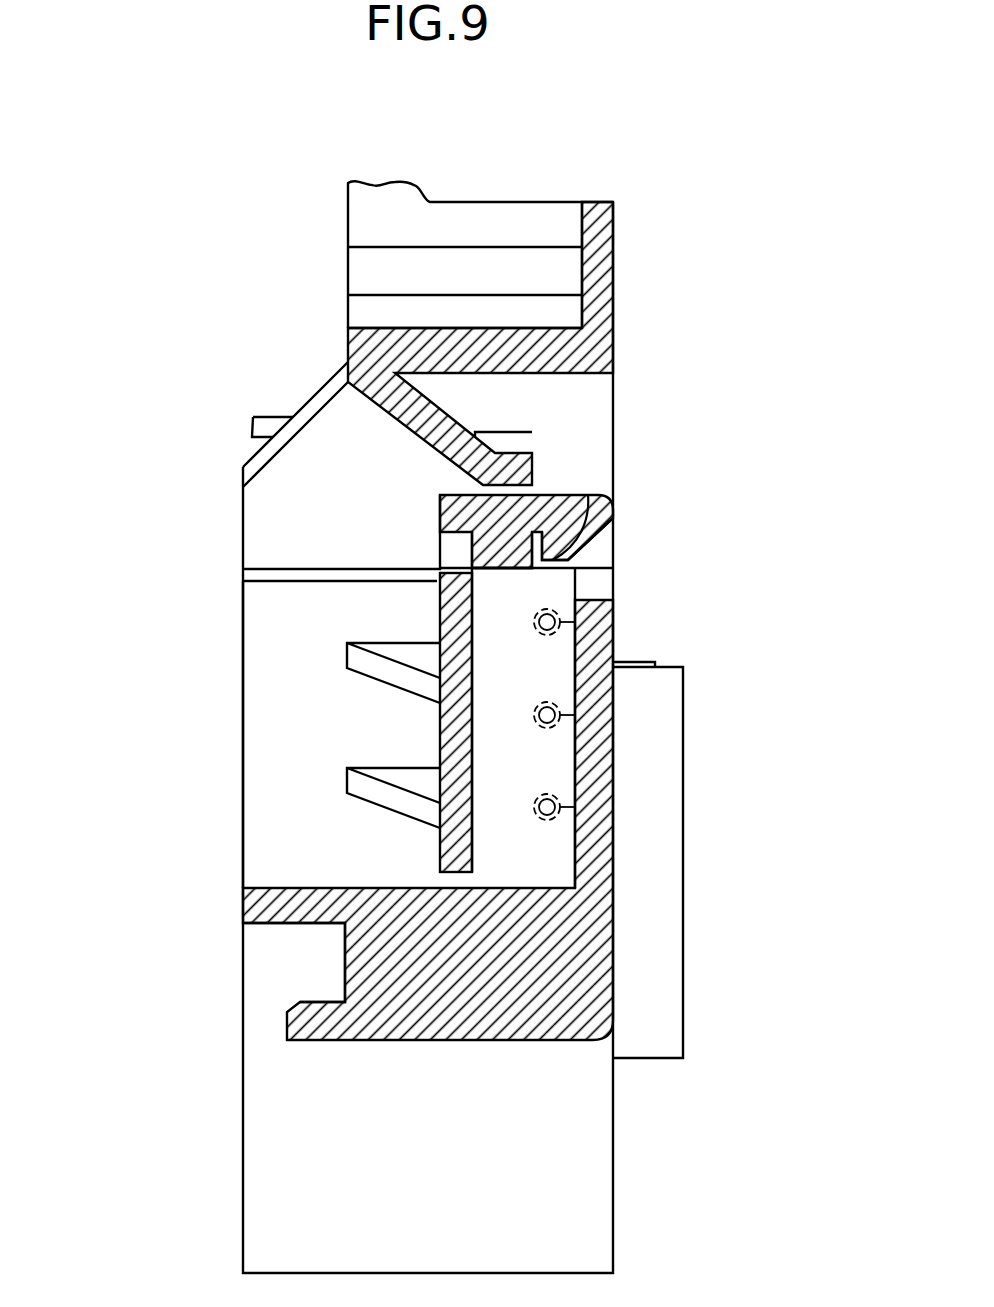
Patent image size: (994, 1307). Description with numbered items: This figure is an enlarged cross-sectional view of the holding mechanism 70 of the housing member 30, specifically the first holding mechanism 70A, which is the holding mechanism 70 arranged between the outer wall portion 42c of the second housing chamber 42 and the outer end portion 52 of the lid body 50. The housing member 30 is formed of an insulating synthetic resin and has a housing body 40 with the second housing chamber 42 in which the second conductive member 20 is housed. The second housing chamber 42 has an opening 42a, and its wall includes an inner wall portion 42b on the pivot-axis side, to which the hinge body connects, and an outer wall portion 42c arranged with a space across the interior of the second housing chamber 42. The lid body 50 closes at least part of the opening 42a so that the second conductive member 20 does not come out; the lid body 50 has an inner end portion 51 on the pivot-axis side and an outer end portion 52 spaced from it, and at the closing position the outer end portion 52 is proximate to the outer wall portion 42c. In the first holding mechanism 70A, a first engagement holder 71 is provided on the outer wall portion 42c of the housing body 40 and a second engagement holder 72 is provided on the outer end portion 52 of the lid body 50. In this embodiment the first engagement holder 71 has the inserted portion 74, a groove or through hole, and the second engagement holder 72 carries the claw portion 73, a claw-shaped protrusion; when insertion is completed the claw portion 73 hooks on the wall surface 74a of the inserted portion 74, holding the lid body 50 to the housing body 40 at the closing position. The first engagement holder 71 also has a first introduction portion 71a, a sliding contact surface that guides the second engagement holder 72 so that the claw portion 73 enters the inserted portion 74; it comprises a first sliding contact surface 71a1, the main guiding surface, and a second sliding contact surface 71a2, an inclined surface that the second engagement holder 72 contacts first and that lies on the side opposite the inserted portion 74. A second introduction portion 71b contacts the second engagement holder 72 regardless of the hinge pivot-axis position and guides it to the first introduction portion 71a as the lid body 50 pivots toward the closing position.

The housing member 30 is at (498, 160).
The housing body 40 is at (613, 237).
The first holding mechanism 70A is at (722, 313).
The holding mechanism 70 is at (423, 385).
The first engagement holder 71 is at (537, 421).
The first introduction portion 71a is at (118, 452).
The first sliding contact surface 71a1 is at (483, 490).
The second sliding contact surface 71a2 is at (477, 520).
The second introduction portion 71b is at (393, 455).
The second engagement holder 72 is at (560, 495).
The claw portion 73 is at (575, 557).
The inserted portion 74 is at (600, 547).
The wall surface 74a is at (573, 548).
The second housing chamber 42 is at (535, 858).
The opening 42a is at (252, 677).
The inner wall portion 42b is at (315, 887).
The outer wall portion 42c is at (330, 572).
The lid body 50 is at (440, 713).
The inner end portion 51 is at (437, 858).
The outer end portion 52 is at (440, 588).
The second conductive member 20 is at (575, 622).